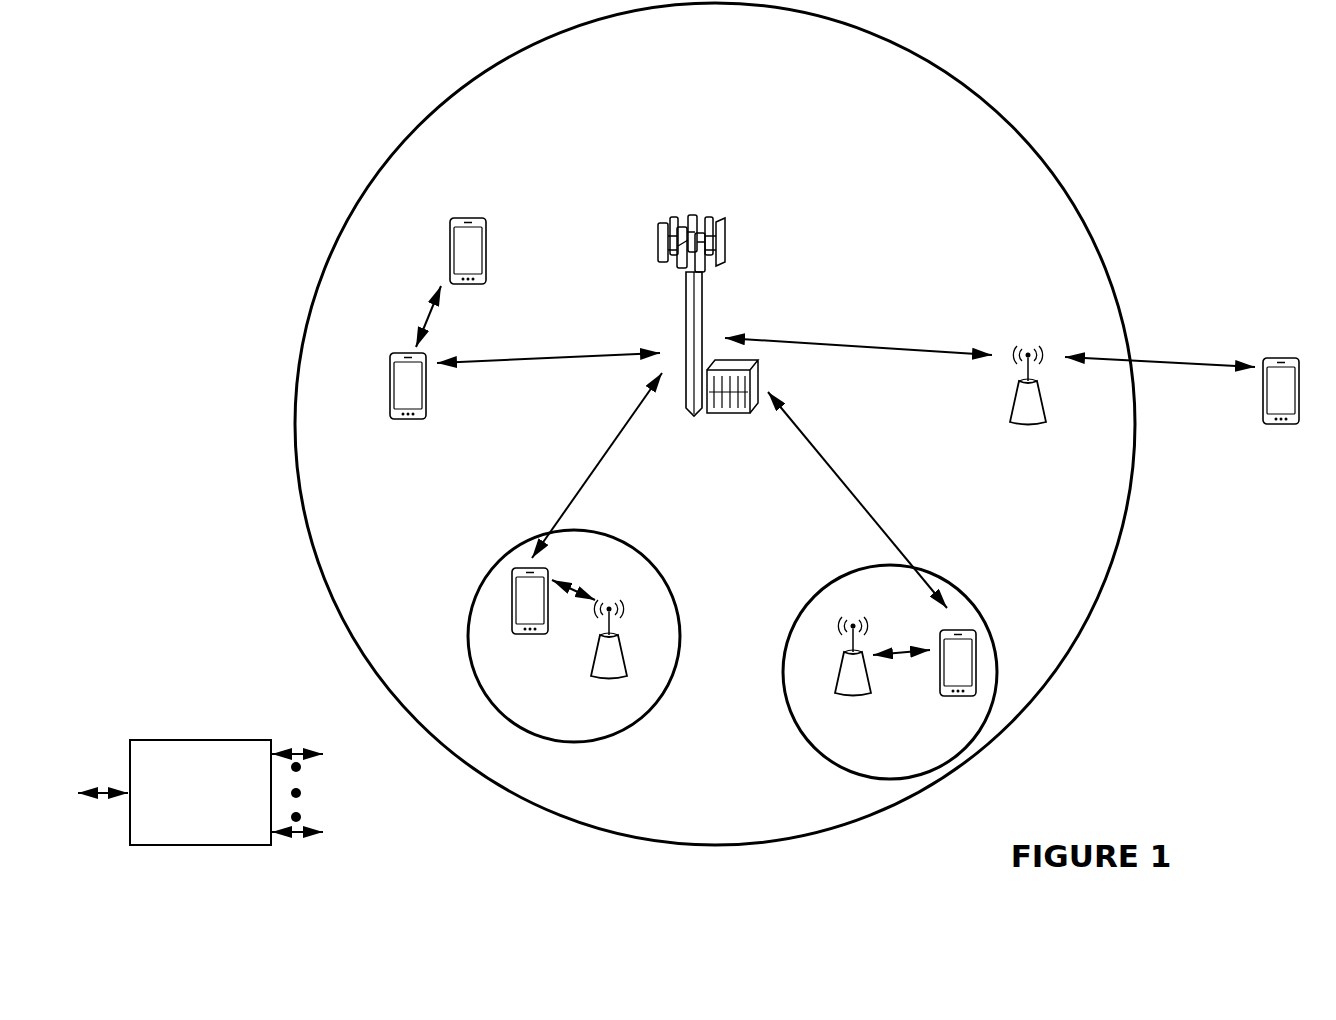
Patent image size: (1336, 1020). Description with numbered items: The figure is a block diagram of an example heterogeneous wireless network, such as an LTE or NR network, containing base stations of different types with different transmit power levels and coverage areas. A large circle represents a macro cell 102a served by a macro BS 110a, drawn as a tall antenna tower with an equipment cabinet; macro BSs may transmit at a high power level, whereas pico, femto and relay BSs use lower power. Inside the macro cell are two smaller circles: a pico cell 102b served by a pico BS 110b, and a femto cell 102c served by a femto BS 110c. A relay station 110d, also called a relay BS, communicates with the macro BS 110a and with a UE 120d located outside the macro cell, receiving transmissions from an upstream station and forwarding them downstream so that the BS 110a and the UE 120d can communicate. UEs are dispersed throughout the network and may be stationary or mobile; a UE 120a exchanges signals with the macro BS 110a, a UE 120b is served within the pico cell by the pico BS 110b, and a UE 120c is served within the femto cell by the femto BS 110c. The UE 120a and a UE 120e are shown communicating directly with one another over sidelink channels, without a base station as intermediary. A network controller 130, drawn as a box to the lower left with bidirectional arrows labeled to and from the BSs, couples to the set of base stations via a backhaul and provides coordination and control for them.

The macro cell 102a is at (990, 110).
The pico cell 102b is at (652, 564).
The femto cell 102c is at (826, 585).
The macro BS 110a is at (704, 205).
The pico BS 110b is at (628, 668).
The femto BS 110c is at (838, 684).
The relay station 110d is at (1028, 344).
The UE 120a is at (390, 376).
The UE 120b is at (516, 638).
The UE 120c is at (955, 697).
The UE 120d is at (1292, 358).
The UE 120e is at (452, 234).
The network controller 130 is at (201, 740).